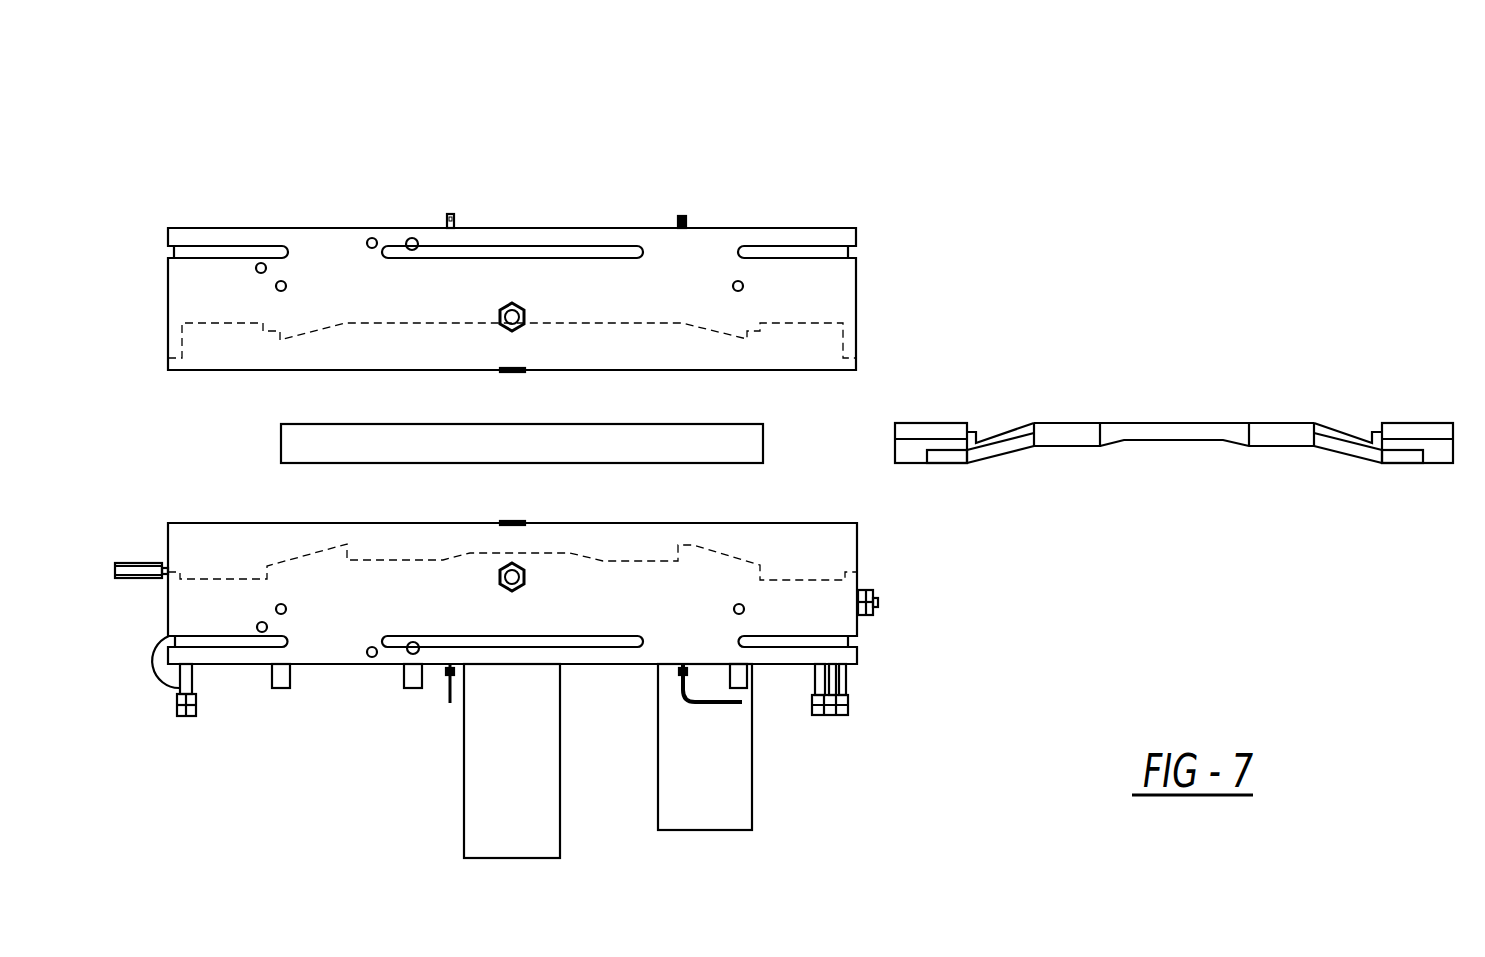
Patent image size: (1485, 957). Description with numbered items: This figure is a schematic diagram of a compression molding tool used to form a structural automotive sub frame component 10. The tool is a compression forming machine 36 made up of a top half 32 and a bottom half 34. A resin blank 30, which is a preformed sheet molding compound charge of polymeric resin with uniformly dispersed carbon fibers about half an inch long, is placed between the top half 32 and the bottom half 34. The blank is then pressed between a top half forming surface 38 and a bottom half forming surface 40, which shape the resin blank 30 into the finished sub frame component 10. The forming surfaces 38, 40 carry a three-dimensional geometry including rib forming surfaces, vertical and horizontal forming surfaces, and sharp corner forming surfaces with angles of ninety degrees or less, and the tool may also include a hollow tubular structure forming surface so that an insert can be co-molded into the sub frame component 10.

The structural automotive sub frame component 10 is at (1157, 423).
The resin blank 30 is at (281, 449).
The top half 32 is at (826, 287).
The bottom half 34 is at (808, 590).
The compression forming machine 36 is at (250, 145).
The top half forming surface 38 is at (700, 327).
The bottom half forming surface 40 is at (708, 548).